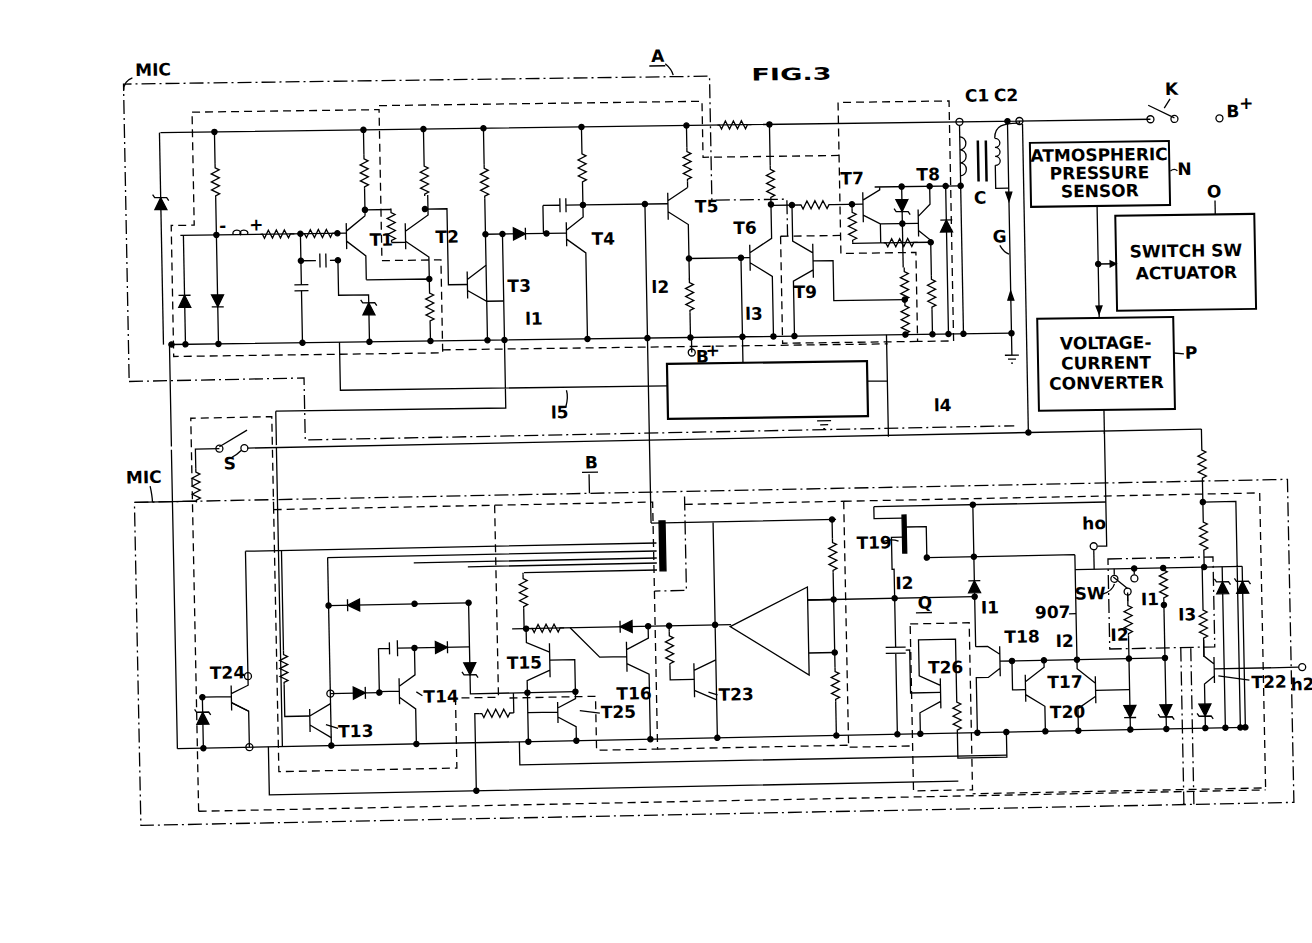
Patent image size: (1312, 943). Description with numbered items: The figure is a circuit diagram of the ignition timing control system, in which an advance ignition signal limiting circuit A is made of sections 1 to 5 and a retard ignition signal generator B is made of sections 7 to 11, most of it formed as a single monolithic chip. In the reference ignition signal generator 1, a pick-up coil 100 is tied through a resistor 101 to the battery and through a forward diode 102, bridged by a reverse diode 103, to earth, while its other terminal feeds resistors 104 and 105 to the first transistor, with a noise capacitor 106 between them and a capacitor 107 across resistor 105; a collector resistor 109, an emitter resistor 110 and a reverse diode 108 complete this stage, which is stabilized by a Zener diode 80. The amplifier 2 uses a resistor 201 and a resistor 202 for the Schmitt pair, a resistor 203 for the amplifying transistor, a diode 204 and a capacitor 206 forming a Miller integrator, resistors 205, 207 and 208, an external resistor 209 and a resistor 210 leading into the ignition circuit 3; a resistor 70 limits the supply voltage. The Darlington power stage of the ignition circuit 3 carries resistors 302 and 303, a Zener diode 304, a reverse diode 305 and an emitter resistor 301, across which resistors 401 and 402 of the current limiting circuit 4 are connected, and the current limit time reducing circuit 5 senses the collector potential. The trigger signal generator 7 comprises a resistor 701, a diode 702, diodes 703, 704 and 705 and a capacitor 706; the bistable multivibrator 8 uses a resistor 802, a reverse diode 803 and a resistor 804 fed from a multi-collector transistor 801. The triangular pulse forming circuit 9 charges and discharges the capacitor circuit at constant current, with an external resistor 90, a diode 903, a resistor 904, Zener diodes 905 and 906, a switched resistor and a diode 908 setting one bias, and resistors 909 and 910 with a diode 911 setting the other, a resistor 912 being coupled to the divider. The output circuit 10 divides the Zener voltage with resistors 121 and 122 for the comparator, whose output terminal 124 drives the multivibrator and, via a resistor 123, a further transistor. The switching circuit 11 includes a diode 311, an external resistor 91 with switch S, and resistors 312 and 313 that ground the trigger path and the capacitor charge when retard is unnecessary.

The reference ignition signal generator 1 is at (245, 106).
The signal amplifier 2 is at (447, 102).
The ignition circuit 3 is at (905, 105).
The current limiting circuit 4 is at (890, 348).
The current limit time reducing circuit 5 is at (890, 406).
The trigger signal generator 7 is at (368, 502).
The bistable multivibrator 8 is at (531, 502).
The triangular pulse forming circuit 9 is at (1032, 505).
The output circuit 10 is at (775, 505).
The switching circuit 11 is at (192, 796).
The resistor 70 is at (740, 121).
The Zener diode 80 is at (166, 190).
The external resistor 90 is at (1206, 470).
The external resistor 91 is at (201, 480).
The pick-up coil 100 is at (246, 233).
The resistor 101 is at (225, 173).
The diode 102 is at (223, 301).
The diode 103 is at (191, 287).
The resistor 104 is at (282, 226).
The resistor 105 is at (325, 226).
The capacitor 106 is at (298, 281).
The capacitor 107 is at (327, 263).
The diode 108 is at (374, 312).
The resistor 109 is at (366, 169).
The resistor 110 is at (429, 301).
The resistor 121 is at (836, 560).
The resistor 122 is at (834, 671).
The resistor 123 is at (671, 649).
The output terminal 124 is at (727, 627).
The resistor 201 is at (396, 207).
The resistor 202 is at (434, 173).
The resistor 203 is at (494, 177).
The diode 204 is at (524, 238).
The resistor 205 is at (593, 169).
The capacitor 206 is at (568, 197).
The resistor 207 is at (689, 179).
The resistor 208 is at (697, 302).
The external resistor 209 is at (773, 186).
The resistor 210 is at (823, 201).
The resistor 301 is at (940, 298).
The resistor 302 is at (857, 248).
The resistor 303 is at (903, 250).
The Zener diode 304 is at (907, 200).
The diode 305 is at (953, 246).
The diode 311 is at (232, 720).
The resistor 312 is at (491, 720).
The resistor 313 is at (950, 740).
The resistor 401 is at (902, 291).
The resistor 402 is at (900, 322).
The resistor 701 is at (284, 662).
The diode 702 is at (355, 681).
The diode 703 is at (440, 633).
The diode 704 is at (351, 593).
The diode 705 is at (467, 655).
The capacitor 706 is at (390, 636).
The multi-collector transistor 801 is at (655, 538).
The resistor 802 is at (526, 591).
The diode 803 is at (622, 621).
The resistor 804 is at (546, 625).
The diode 903 is at (978, 589).
The resistor 904 is at (1200, 546).
The Zener diode 905 is at (1242, 590).
The Zener diode 906 is at (1226, 588).
The diode 908 is at (1127, 715).
The resistor 909 is at (1165, 596).
The resistor 910 is at (1129, 632).
The diode 911 is at (1158, 740).
The resistor 912 is at (1207, 634).